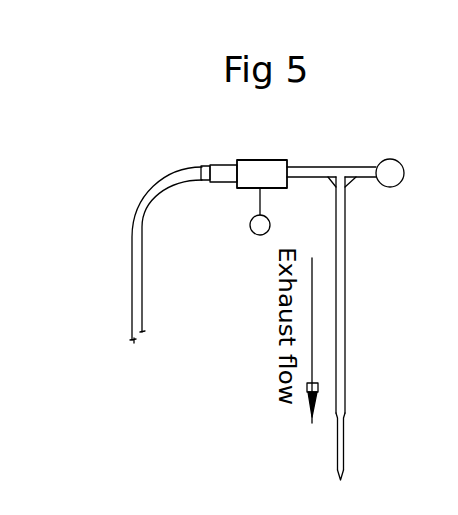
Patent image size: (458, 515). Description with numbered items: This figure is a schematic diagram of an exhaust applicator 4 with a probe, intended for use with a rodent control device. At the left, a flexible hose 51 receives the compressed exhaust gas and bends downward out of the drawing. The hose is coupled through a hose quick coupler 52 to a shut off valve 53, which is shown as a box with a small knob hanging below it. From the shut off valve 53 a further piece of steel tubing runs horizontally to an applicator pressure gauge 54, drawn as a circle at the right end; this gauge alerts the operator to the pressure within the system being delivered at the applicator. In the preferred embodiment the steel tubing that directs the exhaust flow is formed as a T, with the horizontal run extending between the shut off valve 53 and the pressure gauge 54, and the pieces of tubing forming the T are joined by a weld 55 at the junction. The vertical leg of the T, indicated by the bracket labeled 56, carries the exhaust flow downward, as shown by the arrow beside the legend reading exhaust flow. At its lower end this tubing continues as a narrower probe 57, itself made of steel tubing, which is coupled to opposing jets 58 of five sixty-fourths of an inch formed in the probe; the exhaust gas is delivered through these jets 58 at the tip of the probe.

The exhaust applicator 4 is at (110, 157).
The flexible hose 51 is at (128, 282).
The hose quick coupler 52 is at (224, 159).
The shut off valve 53 is at (270, 159).
The applicator pressure gauge 54 is at (381, 160).
The weld 55 is at (326, 192).
The vertical probe tube 56 is at (367, 184).
The probe 57 is at (372, 428).
The jets 58 is at (345, 463).